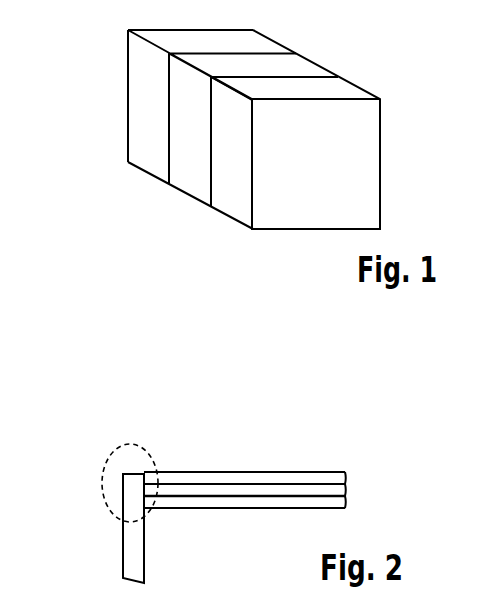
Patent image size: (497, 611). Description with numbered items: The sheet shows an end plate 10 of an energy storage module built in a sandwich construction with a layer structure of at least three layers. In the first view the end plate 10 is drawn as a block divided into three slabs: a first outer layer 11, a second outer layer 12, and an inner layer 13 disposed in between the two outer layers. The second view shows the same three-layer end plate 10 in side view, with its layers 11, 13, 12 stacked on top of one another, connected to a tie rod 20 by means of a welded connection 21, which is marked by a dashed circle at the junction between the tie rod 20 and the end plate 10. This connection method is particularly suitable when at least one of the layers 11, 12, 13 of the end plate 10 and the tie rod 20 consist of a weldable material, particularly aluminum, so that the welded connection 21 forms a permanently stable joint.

In FIG. 1, the end plate 10 is at (213, 137).
In FIG. 2, the end plate 10 is at (272, 462).
In FIG. 1, the first outer layer 11 is at (237, 192).
In FIG. 2, the first outer layer 11 is at (345, 475).
In FIG. 1, the second outer layer 12 is at (153, 147).
In FIG. 2, the second outer layer 12 is at (345, 505).
In FIG. 1, the inner layer 13 is at (198, 169).
In FIG. 2, the inner layer 13 is at (345, 490).
In FIG. 2, the tie rod 20 is at (123, 547).
In FIG. 2, the welded connection 21 is at (135, 452).